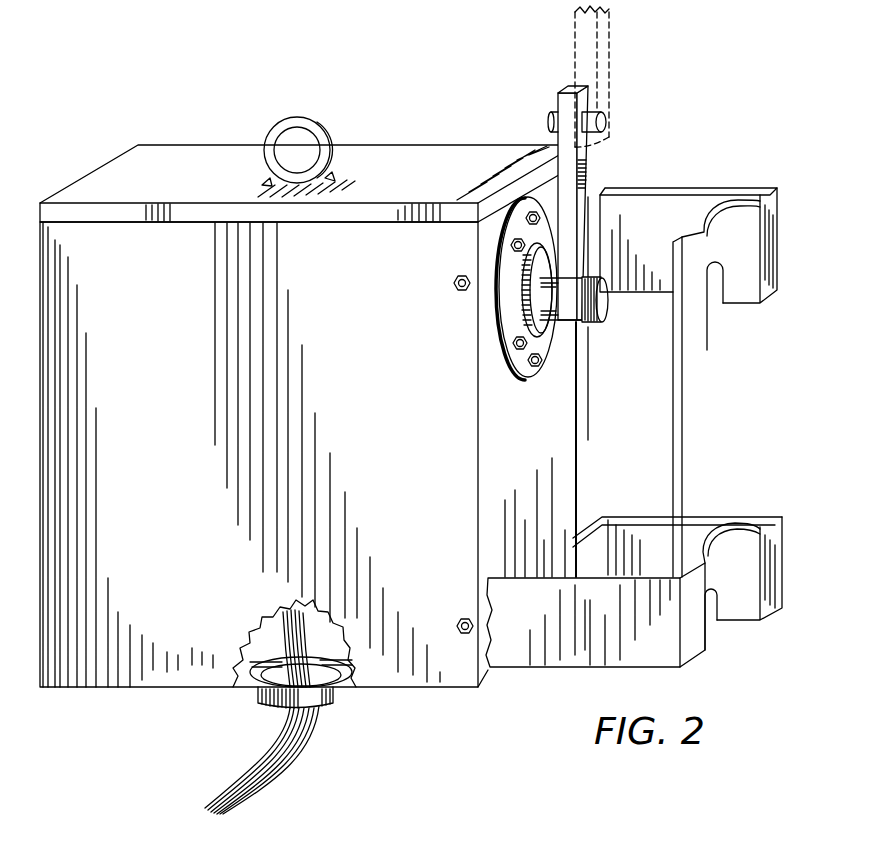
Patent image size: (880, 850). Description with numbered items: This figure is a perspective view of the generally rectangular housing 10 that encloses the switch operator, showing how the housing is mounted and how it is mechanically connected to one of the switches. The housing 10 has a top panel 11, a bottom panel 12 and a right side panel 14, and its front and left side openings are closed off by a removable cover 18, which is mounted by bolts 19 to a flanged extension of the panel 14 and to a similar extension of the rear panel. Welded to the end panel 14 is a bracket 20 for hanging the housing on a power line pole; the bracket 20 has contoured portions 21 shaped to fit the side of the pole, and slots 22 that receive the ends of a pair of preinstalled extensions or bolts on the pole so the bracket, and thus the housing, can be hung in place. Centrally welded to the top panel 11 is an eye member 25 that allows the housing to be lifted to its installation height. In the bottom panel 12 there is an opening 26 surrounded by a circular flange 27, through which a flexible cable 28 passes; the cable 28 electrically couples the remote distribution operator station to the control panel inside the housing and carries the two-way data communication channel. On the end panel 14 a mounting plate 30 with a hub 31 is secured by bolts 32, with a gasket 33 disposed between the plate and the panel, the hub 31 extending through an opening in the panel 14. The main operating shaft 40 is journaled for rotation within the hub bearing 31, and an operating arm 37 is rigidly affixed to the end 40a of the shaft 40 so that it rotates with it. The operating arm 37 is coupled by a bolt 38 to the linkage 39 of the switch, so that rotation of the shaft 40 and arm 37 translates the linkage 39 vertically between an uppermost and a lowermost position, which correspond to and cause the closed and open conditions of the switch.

The housing 10 is at (232, 127).
The top panel 11 is at (400, 162).
The bottom panel 12 is at (250, 680).
The right side panel 14 is at (553, 458).
The removable cover 18 is at (115, 652).
The bolts 19 is at (458, 289).
The bracket 20 is at (758, 176).
The contoured portions 21 is at (737, 250).
The slots 22 is at (716, 290).
The eye member 25 is at (305, 120).
The opening 26 is at (342, 674).
The circular flange 27 is at (322, 700).
The flexible cable 28 is at (275, 775).
The mounting plate 30 is at (540, 345).
The hub 31 is at (548, 263).
The bolts 32 is at (533, 212).
The gasket 33 is at (500, 340).
The operating arm 37 is at (585, 165).
The bolt 38 is at (606, 126).
The linkage 39 is at (601, 28).
The main operating shaft 40 is at (602, 305).
The end of shaft 40a is at (588, 308).